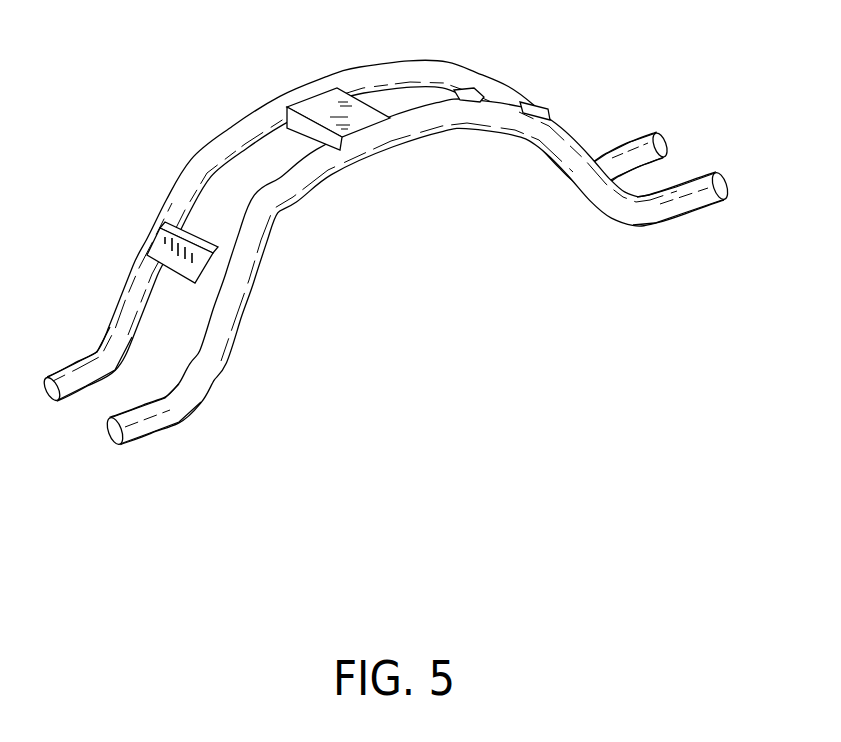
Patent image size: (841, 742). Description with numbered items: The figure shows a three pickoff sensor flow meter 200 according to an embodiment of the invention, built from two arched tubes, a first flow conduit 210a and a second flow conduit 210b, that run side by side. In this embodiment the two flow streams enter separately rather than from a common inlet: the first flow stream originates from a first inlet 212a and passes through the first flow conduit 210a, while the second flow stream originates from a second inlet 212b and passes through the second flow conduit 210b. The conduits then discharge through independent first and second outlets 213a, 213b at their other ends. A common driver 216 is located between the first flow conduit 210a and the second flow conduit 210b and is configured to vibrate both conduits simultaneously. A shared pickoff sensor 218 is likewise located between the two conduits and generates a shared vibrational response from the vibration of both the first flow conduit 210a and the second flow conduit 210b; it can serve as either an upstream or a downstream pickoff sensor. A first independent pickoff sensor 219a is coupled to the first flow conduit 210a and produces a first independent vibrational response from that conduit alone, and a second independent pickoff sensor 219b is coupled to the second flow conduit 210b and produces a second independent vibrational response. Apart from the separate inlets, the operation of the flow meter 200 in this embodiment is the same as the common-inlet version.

The three pickoff sensor flow meter 200 is at (404, 246).
The first flow conduit 210a is at (441, 300).
The second flow conduit 210b is at (381, 234).
The first inlet 212a is at (167, 422).
The second inlet 212b is at (78, 360).
The first outlet 213a is at (712, 203).
The second outlet 213b is at (637, 137).
The common driver 216 is at (323, 107).
The shared pickoff sensor 218 is at (157, 248).
The first independent pickoff sensor 219a is at (540, 105).
The second independent pickoff sensor 219b is at (468, 100).